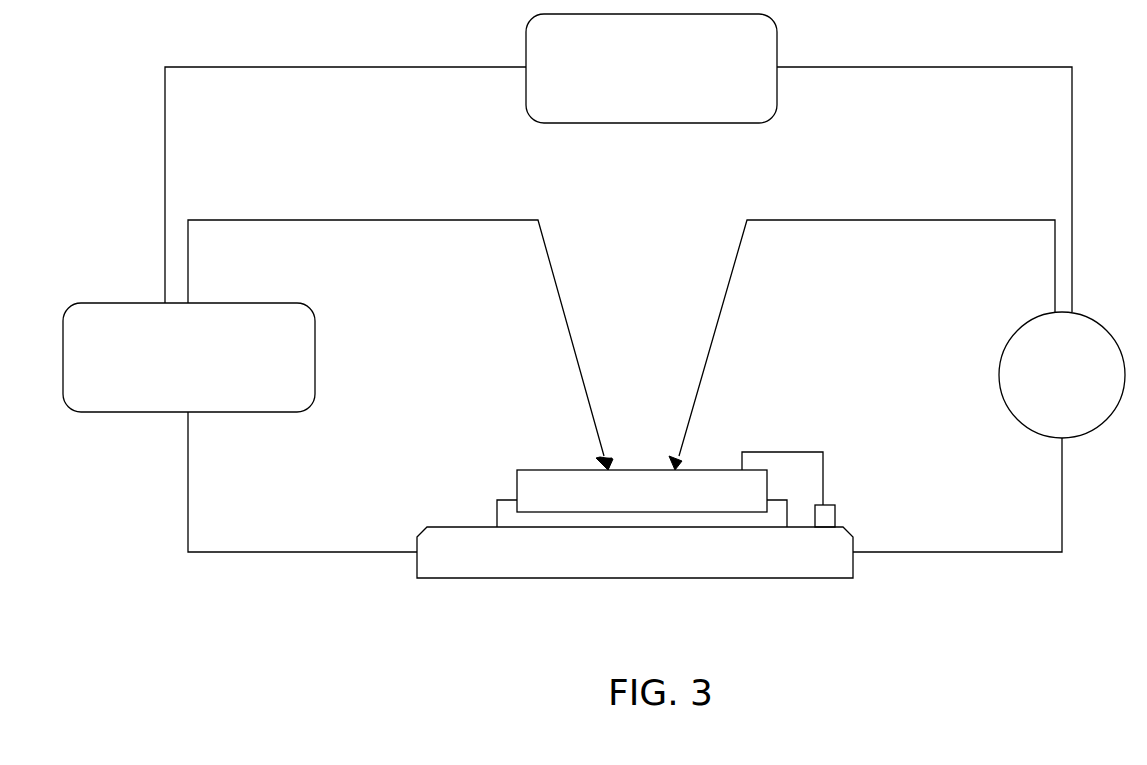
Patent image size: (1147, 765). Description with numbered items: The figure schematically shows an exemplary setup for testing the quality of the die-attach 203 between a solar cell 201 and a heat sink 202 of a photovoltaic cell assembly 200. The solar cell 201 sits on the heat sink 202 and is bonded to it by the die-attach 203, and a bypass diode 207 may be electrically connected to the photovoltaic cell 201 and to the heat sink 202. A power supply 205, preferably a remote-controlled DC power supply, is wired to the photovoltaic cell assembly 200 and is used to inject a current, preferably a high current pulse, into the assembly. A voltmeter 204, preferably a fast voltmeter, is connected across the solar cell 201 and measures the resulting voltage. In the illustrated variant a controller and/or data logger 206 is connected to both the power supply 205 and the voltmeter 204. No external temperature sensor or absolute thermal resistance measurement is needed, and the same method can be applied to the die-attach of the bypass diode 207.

The photovoltaic cell assembly 200 is at (485, 595).
The solar cell 201 is at (518, 470).
The heat sink 202 is at (436, 527).
The die-attach 203 is at (773, 505).
The voltmeter 204 is at (1062, 375).
The power supply 205 is at (189, 357).
The controller and/or data logger 206 is at (651, 68).
The bypass diode 207 is at (825, 518).